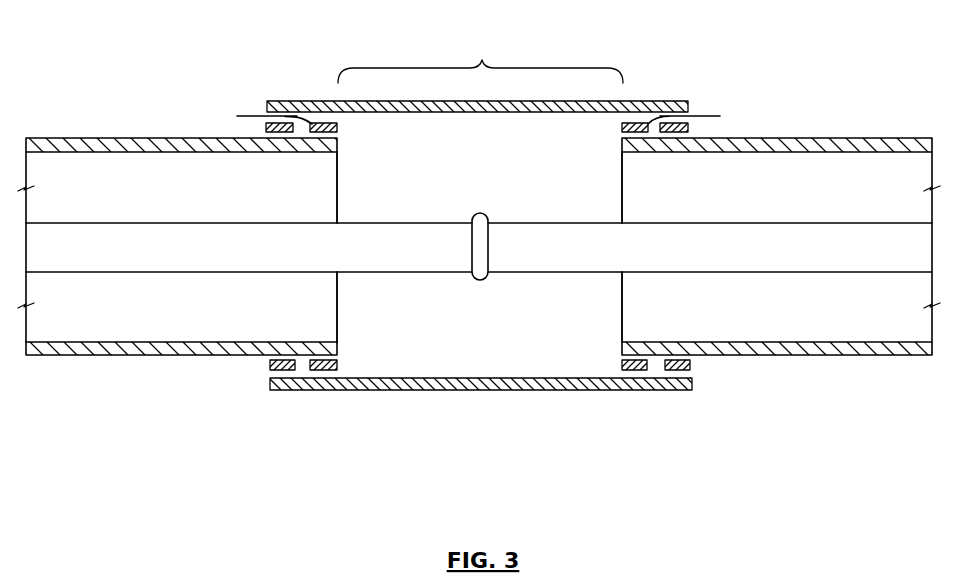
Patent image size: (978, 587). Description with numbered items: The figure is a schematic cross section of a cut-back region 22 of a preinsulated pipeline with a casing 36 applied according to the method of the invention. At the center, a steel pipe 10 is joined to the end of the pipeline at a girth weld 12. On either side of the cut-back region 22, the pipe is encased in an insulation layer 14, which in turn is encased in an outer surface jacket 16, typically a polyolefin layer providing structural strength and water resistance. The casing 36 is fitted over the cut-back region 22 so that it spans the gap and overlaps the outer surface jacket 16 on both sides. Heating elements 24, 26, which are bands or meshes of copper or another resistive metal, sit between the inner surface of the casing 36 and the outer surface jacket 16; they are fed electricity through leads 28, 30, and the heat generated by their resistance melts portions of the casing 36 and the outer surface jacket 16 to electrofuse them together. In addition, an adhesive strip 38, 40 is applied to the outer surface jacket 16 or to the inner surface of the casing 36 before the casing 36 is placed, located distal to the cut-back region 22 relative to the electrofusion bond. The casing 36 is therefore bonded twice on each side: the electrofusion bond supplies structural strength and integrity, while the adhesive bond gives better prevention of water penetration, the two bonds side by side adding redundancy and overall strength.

The steel pipe 10 is at (427, 258).
The girth weld 12 is at (477, 277).
The insulation layer 14 is at (327, 185).
The outer surface jacket 16 is at (150, 140).
The cut-back region 22 is at (480, 56).
The heating element 24 is at (337, 127).
The heating element 26 is at (620, 126).
The electrical connector lead 28 is at (253, 116).
The electrical connector lead 30 is at (704, 114).
The casing 36 is at (640, 101).
The adhesive strip 38 is at (286, 132).
The adhesive strip 40 is at (675, 133).